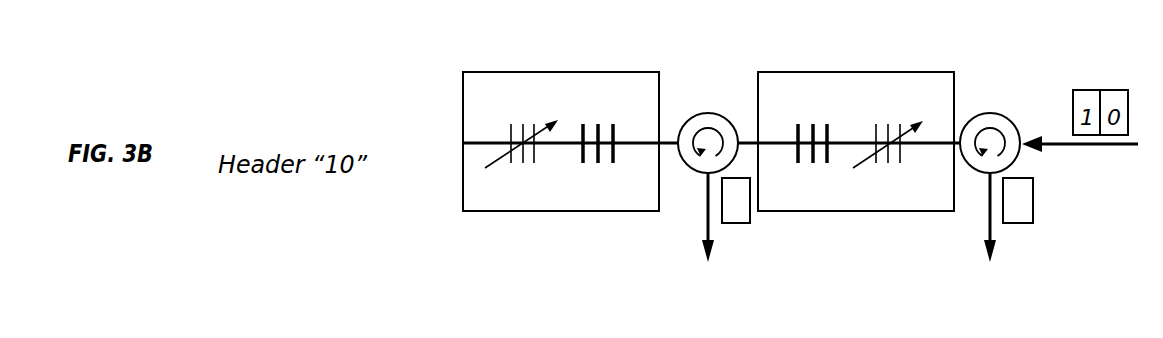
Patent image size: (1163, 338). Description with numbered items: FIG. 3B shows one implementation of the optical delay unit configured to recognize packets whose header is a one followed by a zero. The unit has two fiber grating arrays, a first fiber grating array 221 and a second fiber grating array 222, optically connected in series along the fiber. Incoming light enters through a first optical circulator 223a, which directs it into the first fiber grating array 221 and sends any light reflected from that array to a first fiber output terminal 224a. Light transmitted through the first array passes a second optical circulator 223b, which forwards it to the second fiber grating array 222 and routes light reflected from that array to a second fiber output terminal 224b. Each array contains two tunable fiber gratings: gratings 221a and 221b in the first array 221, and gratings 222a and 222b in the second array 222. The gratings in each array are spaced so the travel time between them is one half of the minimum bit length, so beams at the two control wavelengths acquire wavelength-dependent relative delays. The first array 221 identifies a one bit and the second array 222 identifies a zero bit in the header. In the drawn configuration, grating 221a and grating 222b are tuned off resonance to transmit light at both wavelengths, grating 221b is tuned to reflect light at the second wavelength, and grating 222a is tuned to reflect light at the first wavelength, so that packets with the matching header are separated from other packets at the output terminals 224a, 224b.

The first fiber grating array 221 is at (814, 159).
The first tunable fiber grating 221a is at (909, 187).
The second tunable fiber grating 221b is at (776, 114).
The second fiber grating array 222 is at (528, 172).
The tunable fiber grating of second array 222a is at (625, 123).
The tunable fiber grating of second array 222b is at (499, 181).
The first optical circulator 223a is at (1008, 123).
The second optical circulator 223b is at (682, 177).
The first fiber output terminal 224a is at (1027, 219).
The second fiber output terminal 224b is at (688, 222).